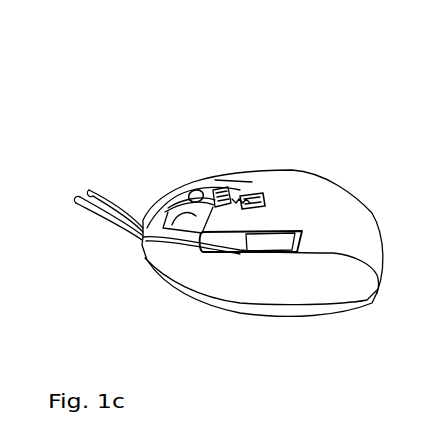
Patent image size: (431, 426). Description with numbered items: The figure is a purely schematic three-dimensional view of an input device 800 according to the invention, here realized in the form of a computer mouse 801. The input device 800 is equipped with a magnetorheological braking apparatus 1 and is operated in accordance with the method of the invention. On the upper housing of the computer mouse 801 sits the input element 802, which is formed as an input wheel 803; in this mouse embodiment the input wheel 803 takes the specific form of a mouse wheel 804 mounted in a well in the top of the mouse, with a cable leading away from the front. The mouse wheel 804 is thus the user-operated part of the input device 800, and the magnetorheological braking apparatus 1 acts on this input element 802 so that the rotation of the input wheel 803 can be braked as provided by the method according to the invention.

The magnetorheological braking apparatus 1 is at (157, 72).
The input device 800 is at (107, 82).
The computer mouse 801 is at (297, 172).
The input element 802 is at (184, 196).
The input wheel 803 is at (176, 199).
The mouse wheel 804 is at (210, 188).